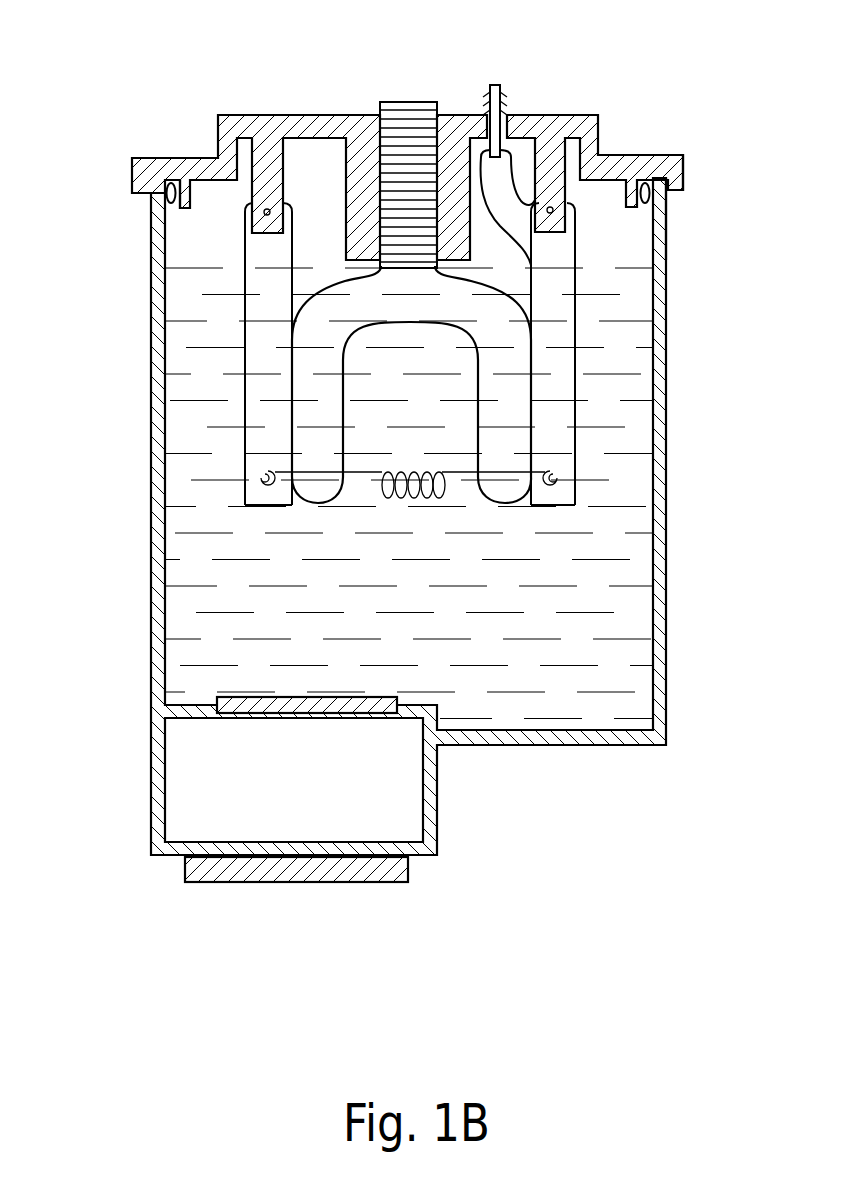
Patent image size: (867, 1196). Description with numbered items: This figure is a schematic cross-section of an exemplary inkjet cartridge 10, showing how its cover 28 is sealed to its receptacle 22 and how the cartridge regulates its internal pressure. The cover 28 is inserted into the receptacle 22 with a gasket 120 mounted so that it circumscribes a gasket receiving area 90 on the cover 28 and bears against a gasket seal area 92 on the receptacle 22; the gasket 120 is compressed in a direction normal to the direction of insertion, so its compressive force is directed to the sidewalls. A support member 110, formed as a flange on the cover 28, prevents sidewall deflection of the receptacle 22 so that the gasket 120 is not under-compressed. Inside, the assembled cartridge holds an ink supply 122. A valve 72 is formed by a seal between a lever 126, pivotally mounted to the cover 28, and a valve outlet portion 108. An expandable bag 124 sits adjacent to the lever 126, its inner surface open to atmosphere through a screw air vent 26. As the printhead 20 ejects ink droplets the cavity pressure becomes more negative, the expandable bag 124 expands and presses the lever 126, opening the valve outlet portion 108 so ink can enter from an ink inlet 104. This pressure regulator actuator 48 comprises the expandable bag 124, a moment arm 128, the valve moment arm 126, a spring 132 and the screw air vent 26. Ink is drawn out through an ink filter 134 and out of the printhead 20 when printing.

The inkjet cartridge 10 is at (180, 132).
The printhead 20 is at (185, 872).
The receptacle 22 is at (668, 288).
The screw air vent 26 is at (376, 102).
The cover 28 is at (652, 167).
The pressure regulator actuator 48 is at (381, 357).
The valve 72 is at (479, 118).
The gasket receiving area 90 is at (173, 204).
The gasket seal area 92 is at (168, 200).
The ink inlet 104 is at (510, 97).
The valve outlet portion 108 is at (495, 161).
The support member 110 is at (673, 173).
The gasket 120 is at (665, 202).
The ink supply 122 is at (637, 268).
The expandable bag 124 is at (327, 328).
The lever 126 is at (555, 360).
The moment arm 128 is at (255, 426).
The spring 132 is at (387, 495).
The ink filter 134 is at (233, 695).